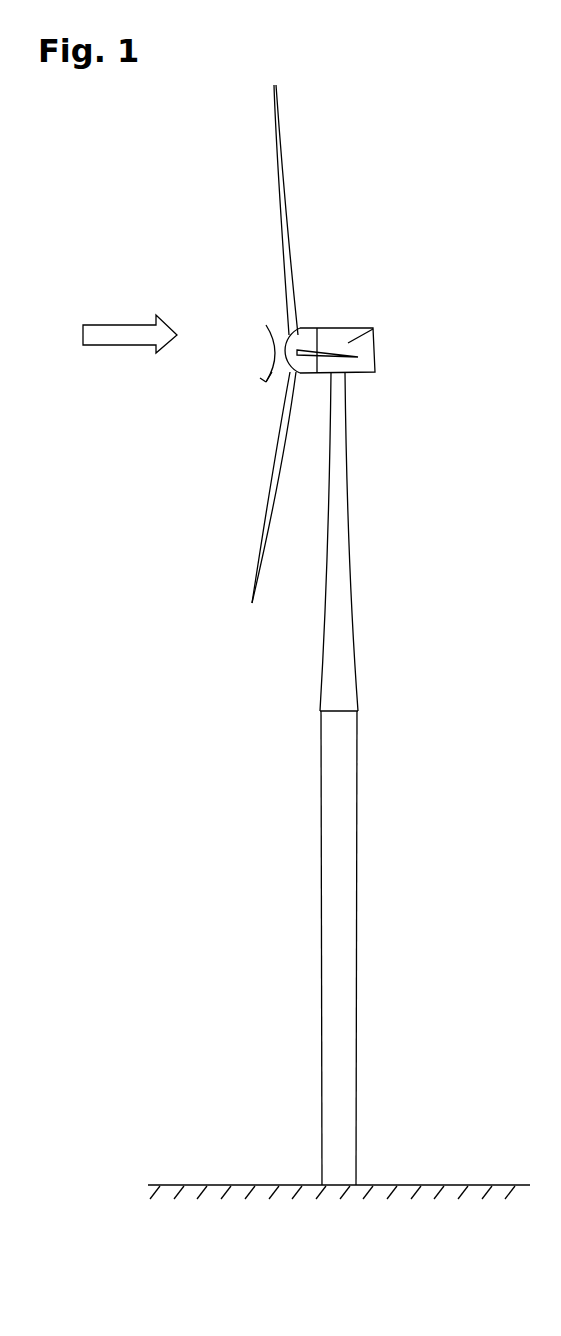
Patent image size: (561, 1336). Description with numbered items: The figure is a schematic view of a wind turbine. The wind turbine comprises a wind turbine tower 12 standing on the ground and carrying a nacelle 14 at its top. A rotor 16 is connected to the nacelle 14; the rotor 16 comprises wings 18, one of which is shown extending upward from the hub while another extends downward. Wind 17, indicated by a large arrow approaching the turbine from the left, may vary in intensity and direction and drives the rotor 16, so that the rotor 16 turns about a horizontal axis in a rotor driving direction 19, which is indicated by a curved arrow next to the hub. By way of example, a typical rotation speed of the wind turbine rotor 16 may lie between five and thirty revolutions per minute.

The wind turbine tower 12 is at (384, 779).
The nacelle 14 is at (365, 343).
The rotor 16 is at (265, 402).
The wind 17 is at (130, 290).
The wings 18 is at (328, 210).
The rotor driving direction 19 is at (270, 367).